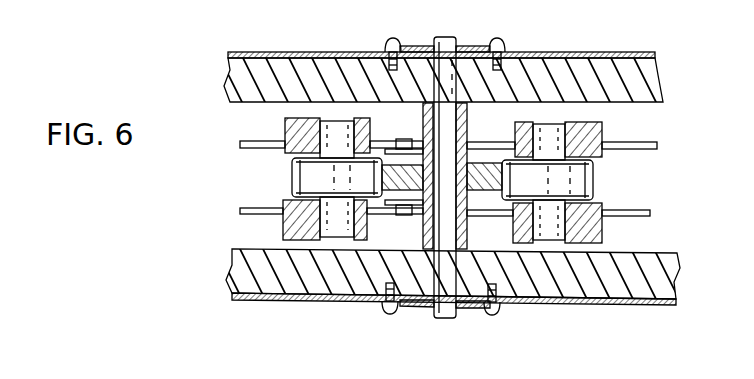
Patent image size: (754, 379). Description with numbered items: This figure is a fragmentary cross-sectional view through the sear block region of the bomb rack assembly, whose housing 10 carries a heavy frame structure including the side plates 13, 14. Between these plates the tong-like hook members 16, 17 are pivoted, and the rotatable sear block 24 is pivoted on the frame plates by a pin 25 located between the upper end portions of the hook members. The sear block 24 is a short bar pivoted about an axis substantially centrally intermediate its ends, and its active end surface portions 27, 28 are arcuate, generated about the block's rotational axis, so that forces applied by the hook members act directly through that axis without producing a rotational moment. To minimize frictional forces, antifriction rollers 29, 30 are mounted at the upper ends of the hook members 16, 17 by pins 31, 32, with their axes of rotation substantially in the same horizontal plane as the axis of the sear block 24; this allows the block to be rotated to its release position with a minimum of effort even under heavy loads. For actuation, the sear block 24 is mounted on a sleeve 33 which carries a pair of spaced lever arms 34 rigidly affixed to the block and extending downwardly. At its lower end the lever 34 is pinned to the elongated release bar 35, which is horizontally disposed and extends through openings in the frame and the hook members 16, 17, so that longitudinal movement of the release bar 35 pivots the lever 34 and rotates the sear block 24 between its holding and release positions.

The housing 10 is at (630, 52).
The side plate 13 is at (532, 302).
The side plate 14 is at (521, 50).
The hook member 16 is at (292, 136).
The hook member 17 is at (603, 140).
The sear block 24 is at (467, 170).
The pin 25 is at (442, 318).
The active end surface portion 27 is at (384, 175).
The active end surface portion 28 is at (500, 186).
The antifriction roller 29 is at (300, 175).
The antifriction roller 30 is at (598, 190).
The pin 31 is at (300, 226).
The pin 32 is at (603, 233).
The sleeve 33 is at (424, 116).
The lever arm 34 is at (423, 151).
The release bar 35 is at (657, 148).